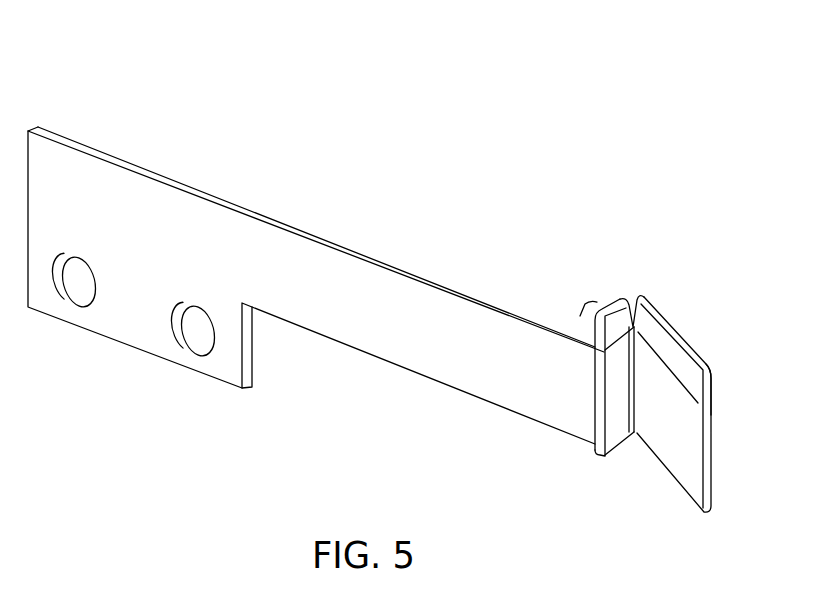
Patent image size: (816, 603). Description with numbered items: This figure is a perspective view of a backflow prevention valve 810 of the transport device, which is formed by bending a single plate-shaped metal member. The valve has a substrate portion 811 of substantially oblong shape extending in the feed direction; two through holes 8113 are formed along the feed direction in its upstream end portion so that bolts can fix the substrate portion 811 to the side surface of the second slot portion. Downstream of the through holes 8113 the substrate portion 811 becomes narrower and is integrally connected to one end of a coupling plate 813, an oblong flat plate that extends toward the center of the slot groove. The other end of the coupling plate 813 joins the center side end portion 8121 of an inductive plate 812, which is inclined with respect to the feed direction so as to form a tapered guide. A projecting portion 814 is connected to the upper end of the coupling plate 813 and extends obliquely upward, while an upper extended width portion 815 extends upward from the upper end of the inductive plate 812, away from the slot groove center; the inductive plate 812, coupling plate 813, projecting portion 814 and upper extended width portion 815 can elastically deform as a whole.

The backflow prevention valve 810 is at (421, 99).
The substrate portion 811 is at (245, 325).
The through holes 8113 is at (70, 307).
The inductive plate 812 is at (718, 417).
The center side end portion 8121 is at (632, 322).
The coupling plate 813 is at (592, 406).
The projecting portion 814 is at (582, 314).
The upper extended width portion 815 is at (718, 413).